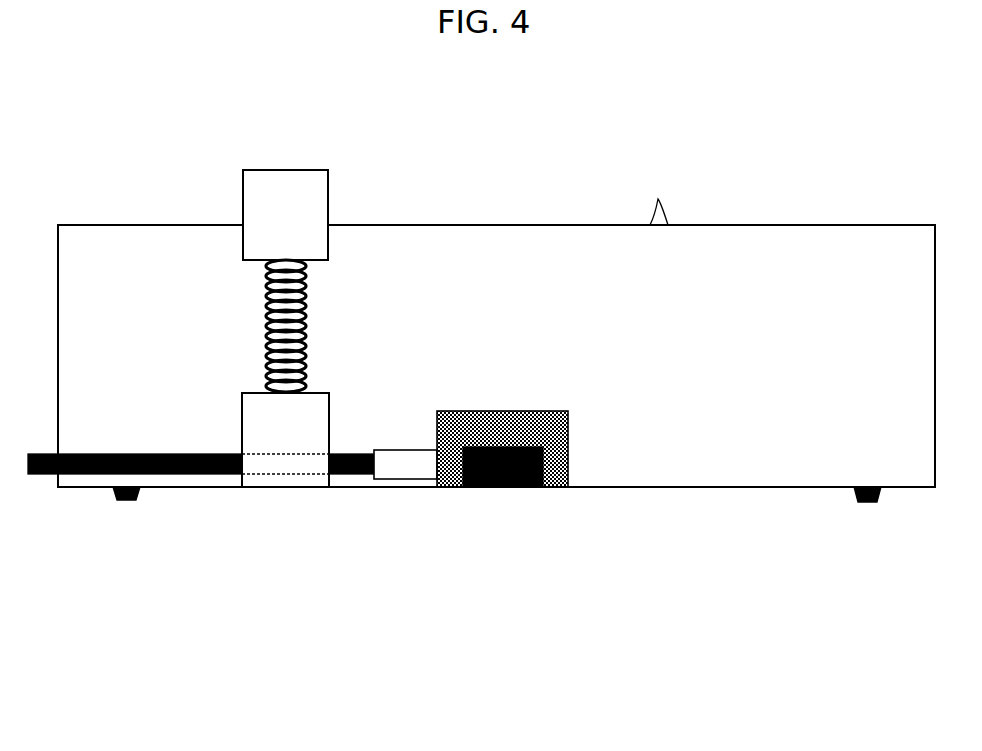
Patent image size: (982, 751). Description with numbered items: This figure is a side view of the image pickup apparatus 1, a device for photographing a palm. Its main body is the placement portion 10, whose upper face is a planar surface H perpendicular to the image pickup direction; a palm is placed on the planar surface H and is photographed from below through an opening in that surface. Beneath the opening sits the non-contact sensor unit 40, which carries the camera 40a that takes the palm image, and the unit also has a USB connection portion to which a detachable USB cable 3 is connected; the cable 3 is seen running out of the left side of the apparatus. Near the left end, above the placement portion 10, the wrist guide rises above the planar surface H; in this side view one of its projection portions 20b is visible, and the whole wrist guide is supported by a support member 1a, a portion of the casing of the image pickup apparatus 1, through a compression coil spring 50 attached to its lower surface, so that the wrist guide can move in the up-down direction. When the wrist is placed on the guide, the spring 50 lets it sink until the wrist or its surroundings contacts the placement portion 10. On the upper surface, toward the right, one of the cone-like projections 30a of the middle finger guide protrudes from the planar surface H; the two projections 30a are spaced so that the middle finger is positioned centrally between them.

The image pickup apparatus 1 is at (673, 516).
The base block 1a is at (330, 403).
The USB cable 3 is at (108, 454).
The placement portion 10 is at (850, 225).
The planar surface H is at (777, 225).
The projection portion 20b is at (328, 189).
The projection 30a is at (668, 213).
The non-contact sensor unit 40 is at (568, 446).
The camera 40a is at (515, 447).
The compression coil spring 50 is at (307, 323).